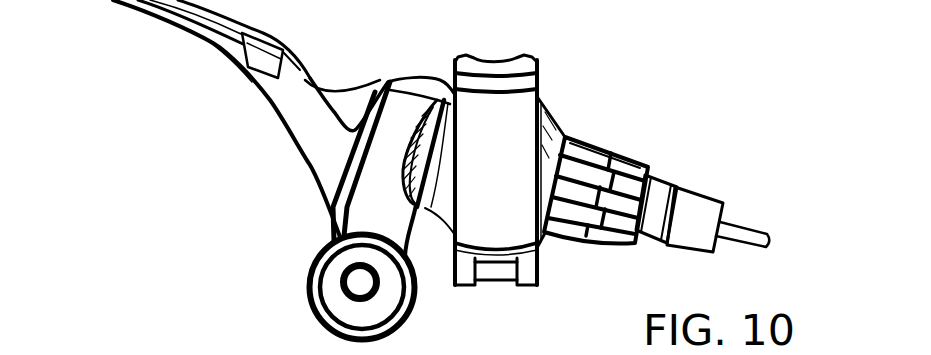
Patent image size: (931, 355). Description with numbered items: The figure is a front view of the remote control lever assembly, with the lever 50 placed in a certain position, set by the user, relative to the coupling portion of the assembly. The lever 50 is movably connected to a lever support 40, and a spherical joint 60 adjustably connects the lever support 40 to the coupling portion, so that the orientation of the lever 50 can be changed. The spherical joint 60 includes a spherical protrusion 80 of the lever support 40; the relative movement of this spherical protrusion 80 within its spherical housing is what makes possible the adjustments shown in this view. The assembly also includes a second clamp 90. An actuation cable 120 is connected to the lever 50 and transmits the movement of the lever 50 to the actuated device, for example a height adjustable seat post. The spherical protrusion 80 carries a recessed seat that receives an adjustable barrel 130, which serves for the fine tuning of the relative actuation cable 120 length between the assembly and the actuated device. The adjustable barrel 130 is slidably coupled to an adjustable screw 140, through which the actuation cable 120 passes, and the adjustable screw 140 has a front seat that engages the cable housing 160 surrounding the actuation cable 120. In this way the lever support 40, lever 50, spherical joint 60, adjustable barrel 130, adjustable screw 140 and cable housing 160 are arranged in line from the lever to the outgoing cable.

The lever support 40 is at (360, 222).
The lever 50 is at (211, 84).
The spherical joint 60 is at (548, 88).
The spherical protrusion 80 is at (545, 130).
The second clamp 90 is at (505, 240).
The actuation cable 120 is at (760, 231).
The adjustable barrel 130 is at (603, 146).
The adjustable screw 140 is at (659, 180).
The cable housing 160 is at (703, 208).